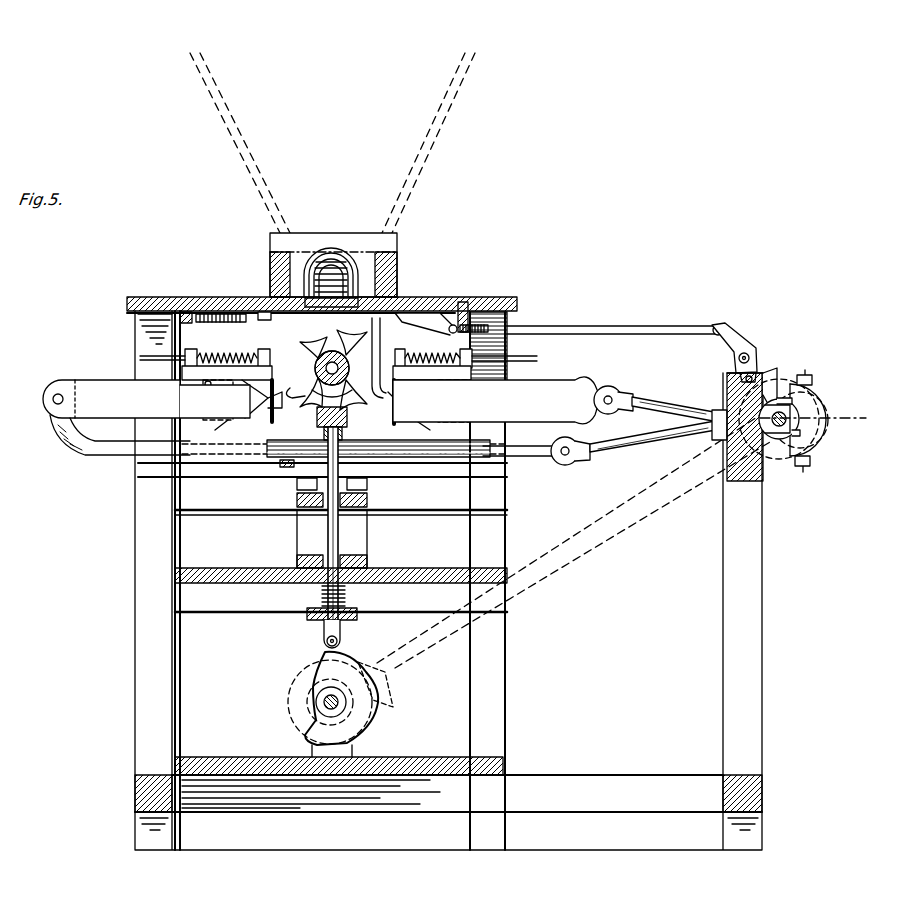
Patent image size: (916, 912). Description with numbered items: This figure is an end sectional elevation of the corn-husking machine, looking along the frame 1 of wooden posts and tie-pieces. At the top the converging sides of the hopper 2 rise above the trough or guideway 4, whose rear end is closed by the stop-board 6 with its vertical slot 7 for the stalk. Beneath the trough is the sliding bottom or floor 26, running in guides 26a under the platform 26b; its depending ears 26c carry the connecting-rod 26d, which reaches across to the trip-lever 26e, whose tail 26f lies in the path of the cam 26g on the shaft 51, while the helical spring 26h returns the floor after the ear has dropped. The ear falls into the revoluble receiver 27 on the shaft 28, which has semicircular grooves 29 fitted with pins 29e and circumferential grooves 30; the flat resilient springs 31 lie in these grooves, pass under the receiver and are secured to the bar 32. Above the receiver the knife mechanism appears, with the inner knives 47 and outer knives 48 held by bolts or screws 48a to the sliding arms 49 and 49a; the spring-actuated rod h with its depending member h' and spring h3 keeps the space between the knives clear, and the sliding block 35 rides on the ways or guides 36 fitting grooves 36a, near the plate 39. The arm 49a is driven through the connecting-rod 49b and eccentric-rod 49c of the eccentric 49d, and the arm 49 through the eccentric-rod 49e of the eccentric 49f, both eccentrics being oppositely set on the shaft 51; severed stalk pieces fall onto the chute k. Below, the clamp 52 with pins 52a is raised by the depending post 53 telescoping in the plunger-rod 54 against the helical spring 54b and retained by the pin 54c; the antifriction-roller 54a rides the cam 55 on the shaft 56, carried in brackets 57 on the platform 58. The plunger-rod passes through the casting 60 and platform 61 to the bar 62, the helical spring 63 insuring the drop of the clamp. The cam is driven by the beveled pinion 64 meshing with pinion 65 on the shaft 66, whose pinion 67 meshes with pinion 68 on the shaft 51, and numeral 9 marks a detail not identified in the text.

The frame 1 is at (150, 633).
The hopper 2 is at (438, 150).
The trough or guideway 4 is at (270, 266).
The stop-board 6 is at (312, 240).
The vertical slot 7 is at (340, 265).
The spring 9 is at (190, 356).
The spring-actuated rod h is at (331, 354).
The spring h3 is at (487, 333).
The depending member h' is at (325, 432).
The chute k is at (420, 446).
The sliding bottom or floor 26 is at (402, 314).
The guides 26a is at (262, 314).
The platform 26b is at (462, 304).
The depending ears 26c is at (490, 310).
The connecting-rod 26d is at (605, 333).
The trip-lever 26e is at (757, 358).
The tail 26f is at (732, 367).
The cam 26g is at (768, 407).
The helical spring 26h is at (190, 312).
The revoluble receiver 27 is at (340, 350).
The shaft 28 is at (312, 364).
The semicircular grooves 29 is at (305, 352).
The pins 29e is at (330, 346).
The circumferential grooves 30 is at (294, 397).
The flat resilient springs 31 is at (386, 358).
The bar 32 is at (305, 470).
The sliding block 35 is at (347, 445).
The ways or guides 36 is at (268, 442).
The grooves 36a is at (300, 458).
The plate 39 is at (260, 404).
The inner knives 47 is at (336, 401).
The outer knives 48 is at (250, 392).
The bolts or screws 48a is at (220, 410).
The sliding arm 49 is at (513, 400).
The sliding arm 49a is at (146, 399).
The connecting-rod 49b is at (115, 455).
The eccentric-rod 49c is at (622, 447).
The eccentric 49d is at (713, 437).
The eccentric-rod 49e is at (683, 400).
The eccentric 49f is at (818, 408).
The shaft 51 is at (792, 426).
The clamp 52 is at (316, 445).
The pins 52a is at (334, 396).
The depending post 53 is at (348, 515).
The plunger-rod 54 is at (340, 555).
The antifriction-roller 54a is at (322, 645).
The helical spring 54b is at (326, 520).
The pin 54c is at (326, 488).
The cam 55 is at (362, 720).
The shaft 56 is at (318, 705).
The brackets 57 is at (312, 750).
The platform 58 is at (208, 760).
The casting 60 is at (358, 543).
The platform 61 is at (430, 583).
The bar 62 is at (306, 616).
The helical spring 63 is at (345, 592).
The beveled pinion 64 is at (300, 676).
The beveled pinion 65 is at (385, 698).
The shaft 66 is at (548, 580).
The beveled pinion 67 is at (582, 555).
The beveled pinion 68 is at (826, 418).